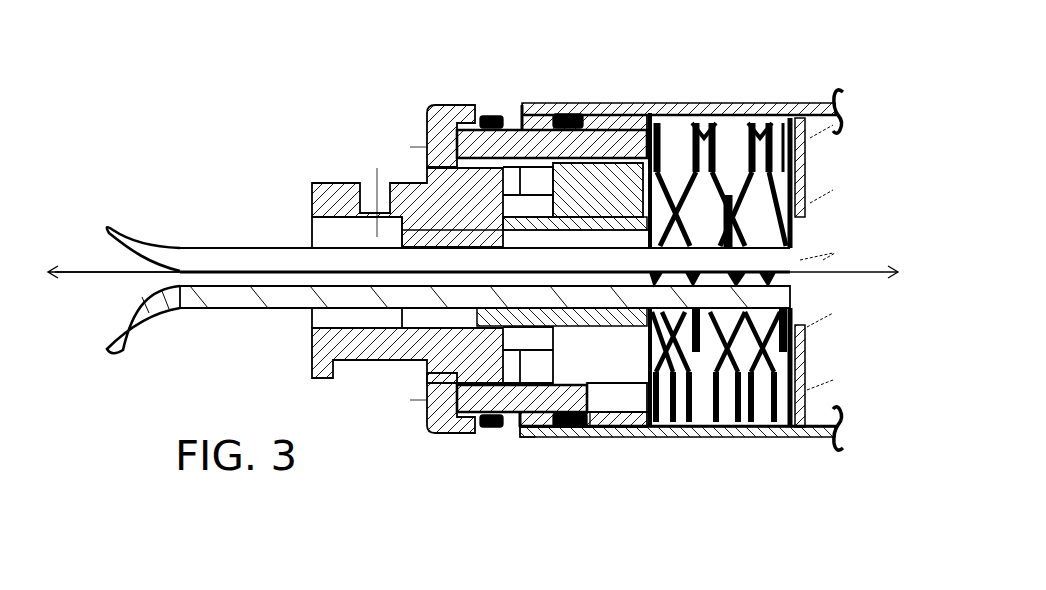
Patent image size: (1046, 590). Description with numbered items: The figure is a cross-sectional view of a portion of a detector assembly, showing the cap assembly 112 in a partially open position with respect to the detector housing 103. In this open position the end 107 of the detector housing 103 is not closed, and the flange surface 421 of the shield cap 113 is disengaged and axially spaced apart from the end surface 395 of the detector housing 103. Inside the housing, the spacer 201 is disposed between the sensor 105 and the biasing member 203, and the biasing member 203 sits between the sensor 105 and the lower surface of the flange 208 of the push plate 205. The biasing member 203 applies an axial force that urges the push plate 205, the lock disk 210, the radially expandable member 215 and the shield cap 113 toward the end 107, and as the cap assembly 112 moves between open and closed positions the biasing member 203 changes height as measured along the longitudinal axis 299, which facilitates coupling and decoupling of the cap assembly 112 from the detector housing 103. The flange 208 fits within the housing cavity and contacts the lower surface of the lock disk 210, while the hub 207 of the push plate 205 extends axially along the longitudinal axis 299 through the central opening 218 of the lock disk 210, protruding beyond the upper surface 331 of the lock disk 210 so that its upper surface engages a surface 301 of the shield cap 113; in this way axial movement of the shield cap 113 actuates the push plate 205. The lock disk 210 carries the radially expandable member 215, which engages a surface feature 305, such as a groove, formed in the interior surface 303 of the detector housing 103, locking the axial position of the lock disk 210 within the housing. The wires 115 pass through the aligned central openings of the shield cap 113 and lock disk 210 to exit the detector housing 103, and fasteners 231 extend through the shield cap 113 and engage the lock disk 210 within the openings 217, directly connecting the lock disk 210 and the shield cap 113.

The detector housing 103 is at (803, 103).
The sensor 105 is at (823, 225).
The end 107 is at (480, 97).
The cap assembly 112 is at (293, 340).
The shield cap 113 is at (400, 362).
The wires 115 is at (128, 332).
The spacer 201 is at (798, 168).
The biasing member 203 is at (707, 147).
The push plate 205 is at (630, 175).
The hub 207 is at (540, 130).
The flange 208 is at (645, 180).
The lock disk 210 is at (647, 398).
The radially expandable member 215 is at (568, 428).
The openings 217 is at (607, 393).
The central opening 218 is at (577, 243).
The fasteners 231 is at (482, 150).
The longitudinal axis 299 is at (138, 275).
The surface 301 is at (473, 227).
The interior surface 303 is at (743, 122).
The surface feature 305 is at (578, 420).
The upper surface 331 is at (553, 372).
The end surface 395 is at (520, 432).
The flange surface 421 is at (478, 418).